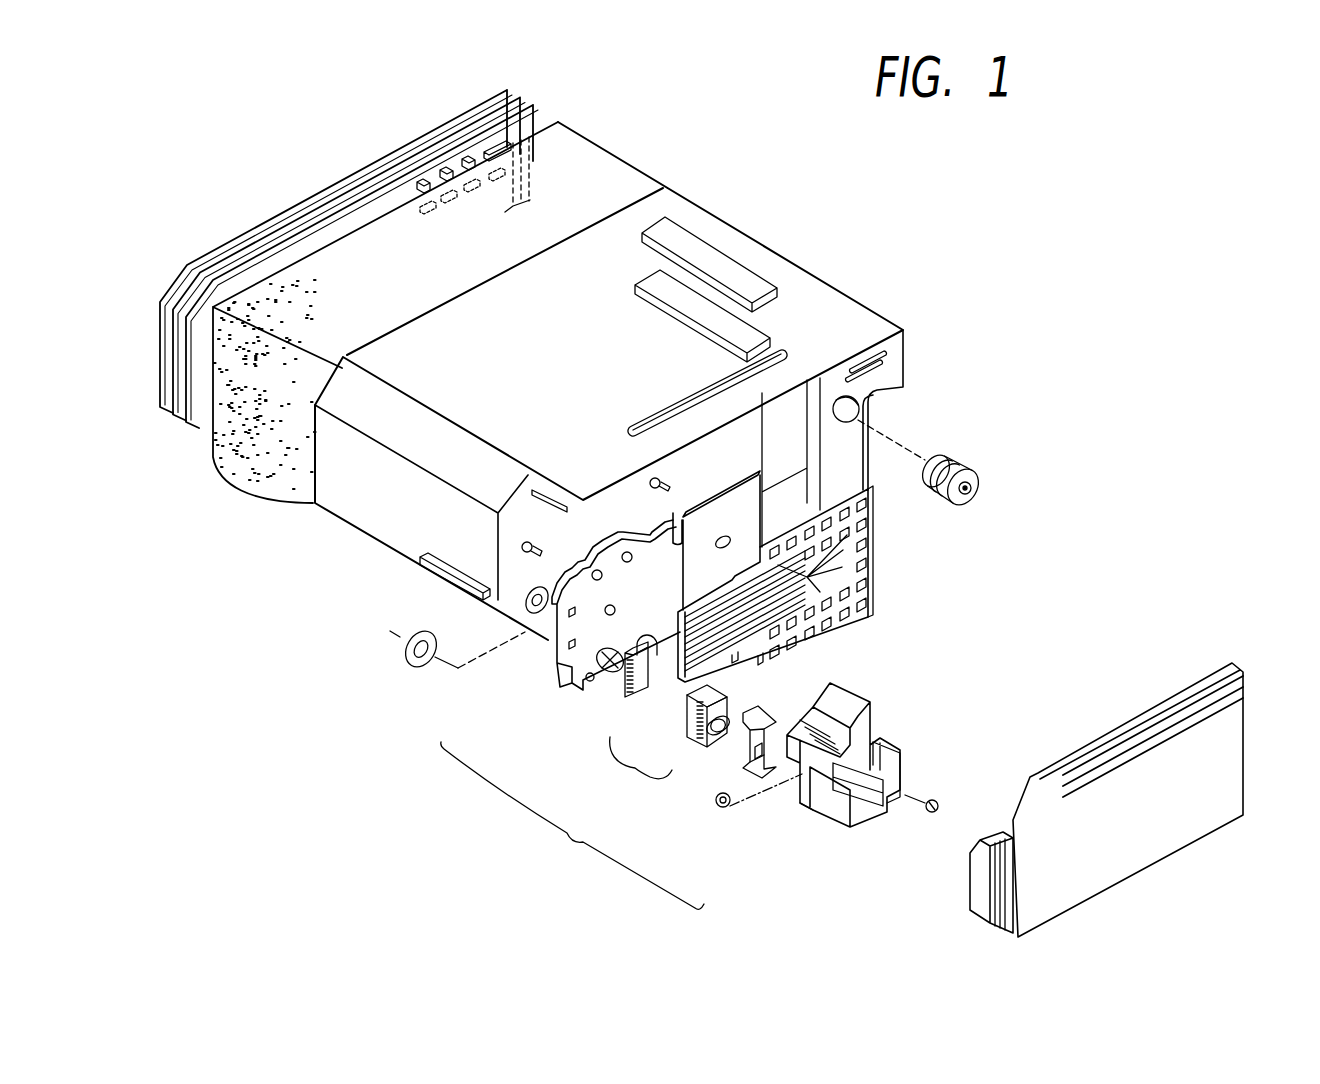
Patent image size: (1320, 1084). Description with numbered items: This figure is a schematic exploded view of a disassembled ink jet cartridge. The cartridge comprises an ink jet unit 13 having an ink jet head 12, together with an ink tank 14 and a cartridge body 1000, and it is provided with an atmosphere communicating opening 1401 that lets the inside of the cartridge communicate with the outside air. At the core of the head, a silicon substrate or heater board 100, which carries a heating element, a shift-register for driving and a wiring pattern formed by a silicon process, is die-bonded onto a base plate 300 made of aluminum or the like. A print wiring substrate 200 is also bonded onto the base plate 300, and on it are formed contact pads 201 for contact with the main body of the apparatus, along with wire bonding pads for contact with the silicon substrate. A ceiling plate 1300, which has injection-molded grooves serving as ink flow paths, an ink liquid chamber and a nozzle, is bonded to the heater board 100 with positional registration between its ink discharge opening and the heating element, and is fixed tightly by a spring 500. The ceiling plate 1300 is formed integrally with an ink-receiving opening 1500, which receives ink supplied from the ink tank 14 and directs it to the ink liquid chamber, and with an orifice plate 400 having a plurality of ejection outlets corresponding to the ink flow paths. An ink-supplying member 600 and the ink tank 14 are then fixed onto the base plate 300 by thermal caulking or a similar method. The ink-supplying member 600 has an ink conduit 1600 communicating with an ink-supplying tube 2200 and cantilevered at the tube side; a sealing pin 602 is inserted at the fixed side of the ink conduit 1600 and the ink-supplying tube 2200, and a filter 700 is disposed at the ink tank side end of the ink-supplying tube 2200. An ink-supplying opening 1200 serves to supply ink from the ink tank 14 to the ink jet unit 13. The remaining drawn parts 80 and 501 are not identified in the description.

The ink tank 14 is at (692, 195).
The cartridge body 1000 is at (726, 222).
The base plate 300 is at (760, 492).
The atmosphere communicating opening 1401 is at (880, 392).
The print wiring substrate 200 is at (880, 538).
The contact pads 201 is at (873, 558).
The ink-supplying opening 1200 is at (522, 603).
The ceiling plate 1300 is at (735, 687).
The heater board 100 is at (647, 700).
The connector 80 is at (690, 705).
The orifice plate 400 is at (722, 735).
The spring 500 is at (776, 718).
The ink-receiving opening 1500 is at (750, 718).
The clip lower part 501 is at (760, 792).
The filter 700 is at (722, 808).
The ink-supplying member 600 is at (832, 848).
The ink-supplying tube 2200 is at (877, 740).
The ink conduit 1600 is at (798, 812).
The sealing pin 602 is at (928, 815).
The ink jet head 12 is at (644, 804).
The ink jet unit 13 is at (572, 825).